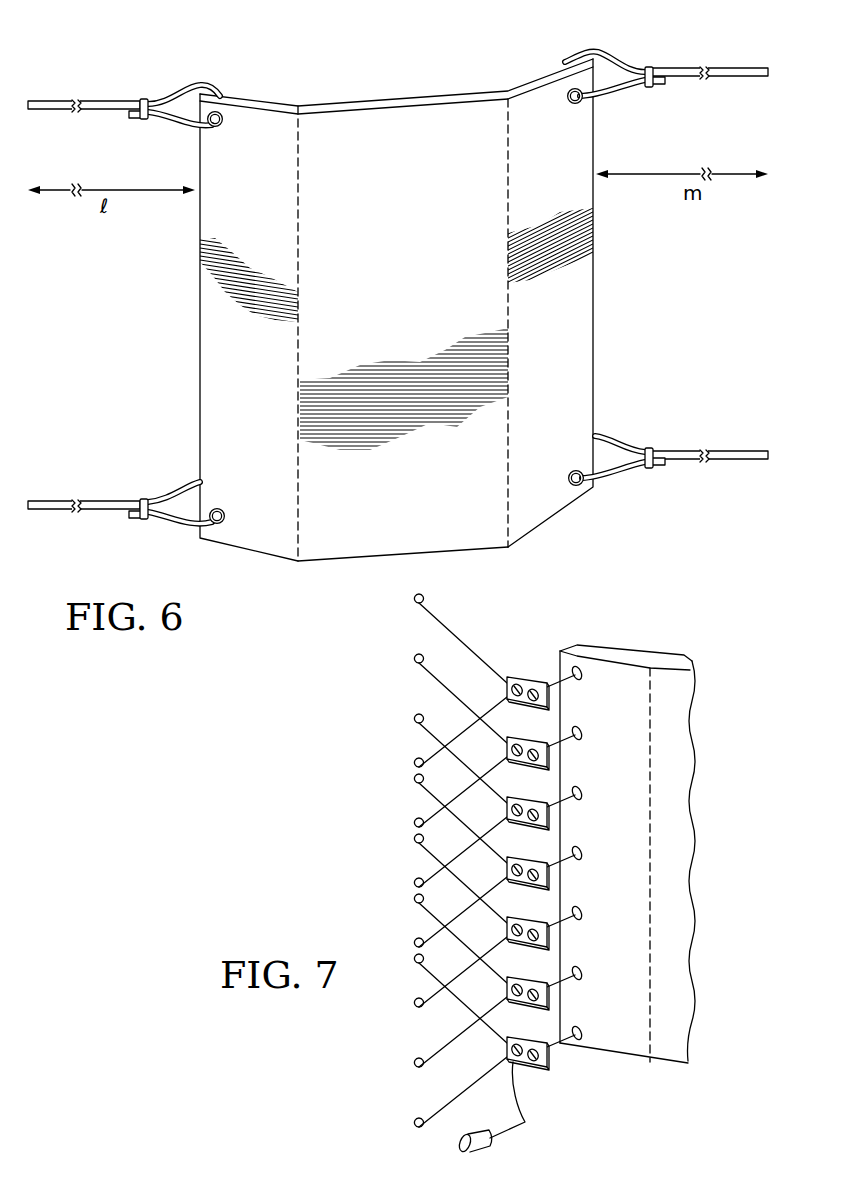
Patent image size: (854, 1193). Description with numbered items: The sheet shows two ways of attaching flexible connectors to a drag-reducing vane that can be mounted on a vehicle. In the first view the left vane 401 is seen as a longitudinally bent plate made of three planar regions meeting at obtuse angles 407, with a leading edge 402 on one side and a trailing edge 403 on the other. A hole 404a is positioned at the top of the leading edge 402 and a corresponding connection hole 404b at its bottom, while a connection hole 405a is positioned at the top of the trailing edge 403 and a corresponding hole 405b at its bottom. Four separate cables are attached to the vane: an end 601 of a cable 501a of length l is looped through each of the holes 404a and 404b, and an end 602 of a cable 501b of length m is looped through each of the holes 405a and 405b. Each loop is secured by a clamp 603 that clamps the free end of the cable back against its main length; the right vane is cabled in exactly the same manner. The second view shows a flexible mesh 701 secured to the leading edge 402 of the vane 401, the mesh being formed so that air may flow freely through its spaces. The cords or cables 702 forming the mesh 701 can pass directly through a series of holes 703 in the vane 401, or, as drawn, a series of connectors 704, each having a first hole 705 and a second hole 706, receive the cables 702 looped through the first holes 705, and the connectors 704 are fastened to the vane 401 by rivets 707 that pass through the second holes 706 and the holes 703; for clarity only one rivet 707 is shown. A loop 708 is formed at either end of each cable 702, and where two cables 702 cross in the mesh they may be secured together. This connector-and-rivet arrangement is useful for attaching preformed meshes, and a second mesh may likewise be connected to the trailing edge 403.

In FIG. 6, the left vane 401 is at (360, 96).
In FIG. 7, the left vane 401 is at (665, 1075).
In FIG. 6, the leading edge 402 is at (200, 280).
In FIG. 7, the leading edge 402 is at (559, 660).
In FIG. 6, the trailing edge 403 is at (594, 316).
In FIG. 6, the hole 404a is at (215, 126).
In FIG. 6, the connection hole 404b is at (220, 510).
In FIG. 6, the connection hole 405a is at (576, 102).
In FIG. 6, the hole 405b is at (575, 473).
In FIG. 6, the obtuse angle 407 is at (300, 208).
In FIG. 6, the cable 501a is at (50, 102).
In FIG. 6, the cable 501b is at (737, 78).
In FIG. 6, the end of cable 601 is at (135, 119).
In FIG. 6, the end of cable 602 is at (656, 85).
In FIG. 6, the clamp 603 is at (143, 99).
In FIG. 7, the flexible mesh 701 is at (443, 1130).
In FIG. 7, the cables 702 is at (493, 700).
In FIG. 7, the holes 703 is at (582, 792).
In FIG. 7, the connector 704 is at (549, 1000).
In FIG. 7, the first hole 705 is at (530, 1113).
In FIG. 7, the second hole 706 is at (536, 1062).
In FIG. 7, the rivet 707 is at (482, 1150).
In FIG. 7, the loop 708 is at (400, 724).